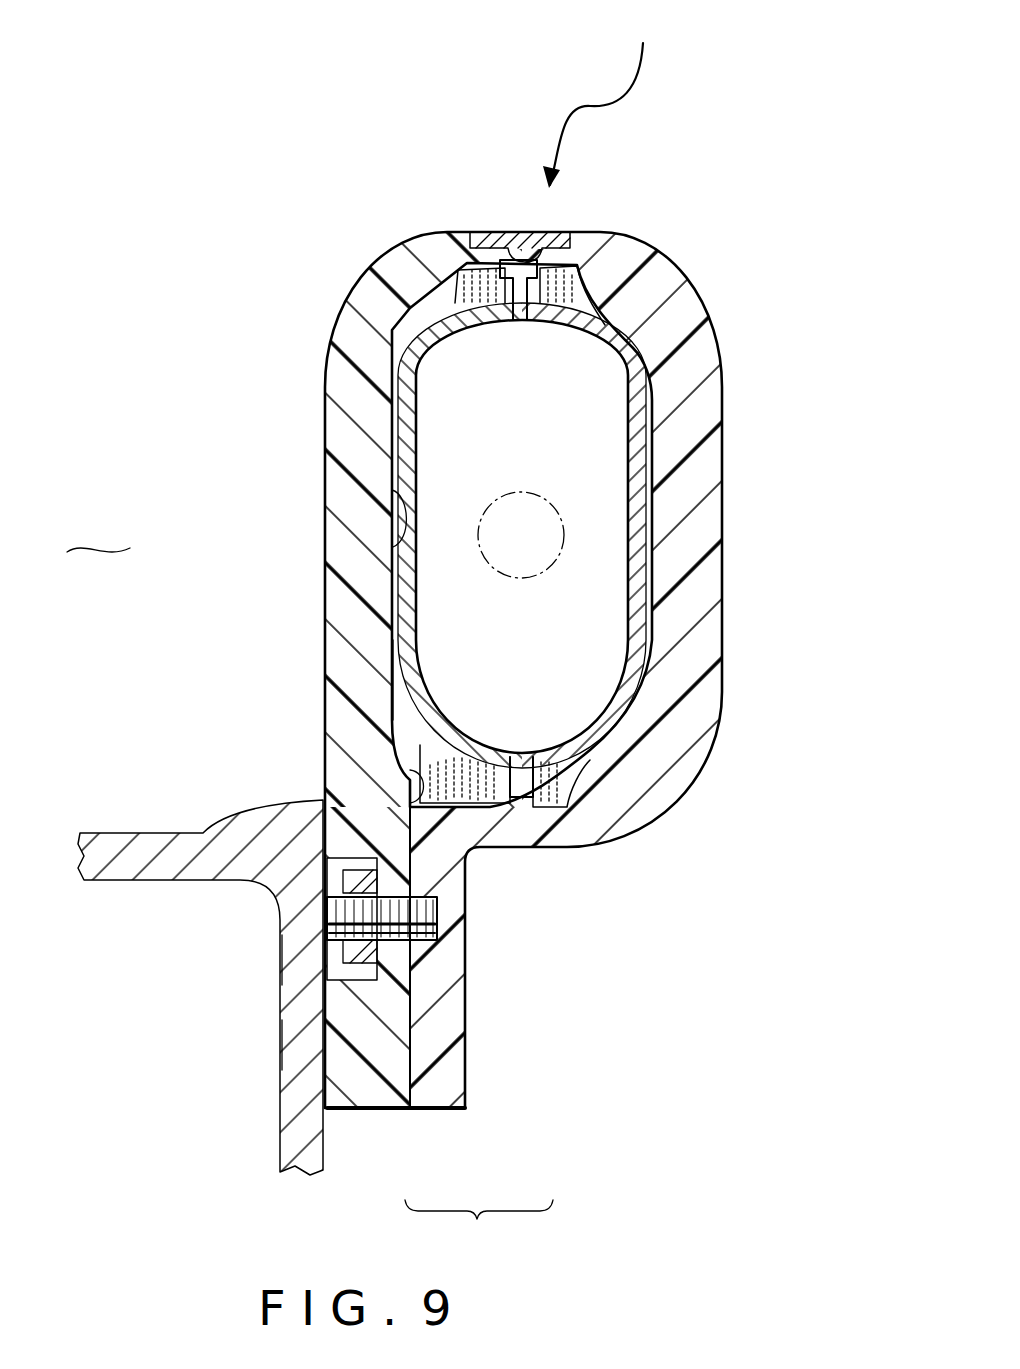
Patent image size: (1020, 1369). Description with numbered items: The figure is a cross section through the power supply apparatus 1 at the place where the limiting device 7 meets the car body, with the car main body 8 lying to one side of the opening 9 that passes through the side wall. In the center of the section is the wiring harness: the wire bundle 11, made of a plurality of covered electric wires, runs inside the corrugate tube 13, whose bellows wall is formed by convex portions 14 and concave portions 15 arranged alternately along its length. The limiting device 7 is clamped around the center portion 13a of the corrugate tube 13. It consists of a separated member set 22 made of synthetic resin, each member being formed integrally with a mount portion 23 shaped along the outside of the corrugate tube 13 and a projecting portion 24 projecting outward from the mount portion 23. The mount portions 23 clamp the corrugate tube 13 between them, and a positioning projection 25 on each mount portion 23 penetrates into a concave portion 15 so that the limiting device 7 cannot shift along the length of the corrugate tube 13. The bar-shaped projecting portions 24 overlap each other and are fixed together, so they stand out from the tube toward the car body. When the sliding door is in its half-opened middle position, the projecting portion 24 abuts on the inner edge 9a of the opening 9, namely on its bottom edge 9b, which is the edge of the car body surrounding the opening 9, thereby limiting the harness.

The power supply apparatus 1 is at (598, 96).
The limiting device 7 is at (479, 1230).
The car main body 8 is at (111, 551).
The opening 9 is at (467, 887).
The inner edge 9a is at (302, 1043).
The bottom edge 9b is at (300, 962).
The wire bundle 11 is at (565, 528).
The corrugate tube 13 is at (410, 770).
The center portion 13a is at (395, 700).
The convex portions 14 is at (392, 620).
The concave portions 15 is at (487, 783).
The separated member set 22 is at (375, 1113).
The mount portion 23 is at (323, 487).
The projecting portion 24 is at (440, 1037).
The positioning projection 25 is at (402, 500).